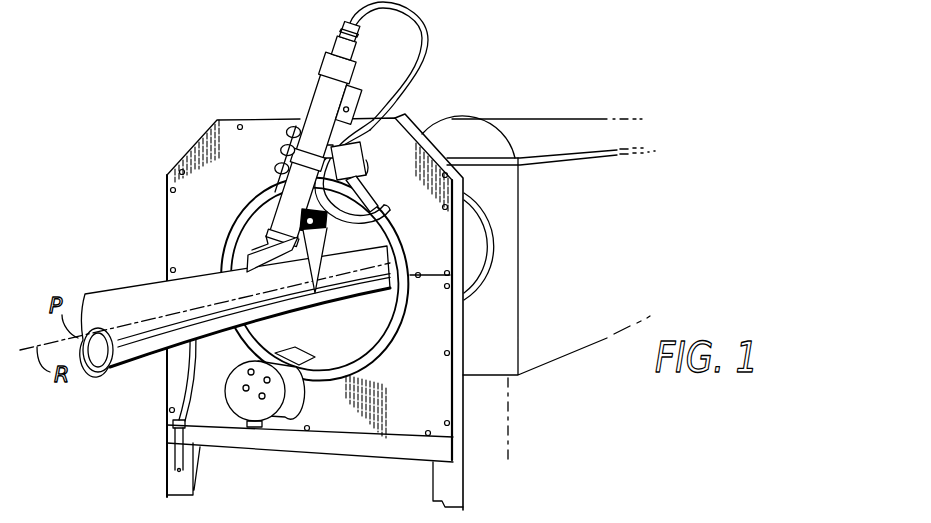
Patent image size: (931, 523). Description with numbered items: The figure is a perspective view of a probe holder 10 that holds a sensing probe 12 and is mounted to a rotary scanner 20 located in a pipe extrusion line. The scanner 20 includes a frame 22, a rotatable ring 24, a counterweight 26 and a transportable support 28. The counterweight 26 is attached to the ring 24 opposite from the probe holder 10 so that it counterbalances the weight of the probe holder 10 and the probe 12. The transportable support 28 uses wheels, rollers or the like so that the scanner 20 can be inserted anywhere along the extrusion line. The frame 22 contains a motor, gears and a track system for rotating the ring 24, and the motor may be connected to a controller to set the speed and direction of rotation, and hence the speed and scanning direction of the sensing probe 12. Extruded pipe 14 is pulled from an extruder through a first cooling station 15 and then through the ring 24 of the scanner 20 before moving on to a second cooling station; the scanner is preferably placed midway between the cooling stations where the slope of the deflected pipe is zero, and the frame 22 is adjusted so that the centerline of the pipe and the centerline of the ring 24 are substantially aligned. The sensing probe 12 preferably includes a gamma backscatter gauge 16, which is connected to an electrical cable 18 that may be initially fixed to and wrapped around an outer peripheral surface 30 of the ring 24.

The probe holder 10 is at (359, 147).
The sensing probe 12 is at (320, 90).
The extruded pipe 14 is at (128, 296).
The first cooling station 15 is at (528, 120).
The gamma backscatter gauge 16 is at (278, 186).
The electrical cable 18 is at (417, 20).
The rotary scanner 20 is at (477, 388).
The frame 22 is at (171, 233).
The rotatable ring 24 is at (240, 218).
The counterweight 26 is at (260, 412).
The transportable support 28 is at (455, 480).
The outer peripheral surface 30 is at (370, 194).